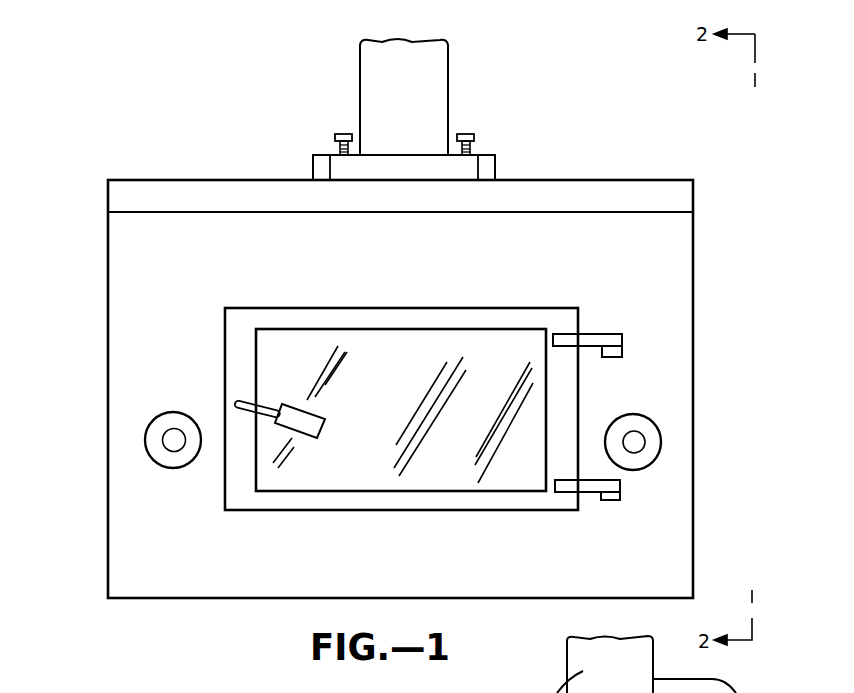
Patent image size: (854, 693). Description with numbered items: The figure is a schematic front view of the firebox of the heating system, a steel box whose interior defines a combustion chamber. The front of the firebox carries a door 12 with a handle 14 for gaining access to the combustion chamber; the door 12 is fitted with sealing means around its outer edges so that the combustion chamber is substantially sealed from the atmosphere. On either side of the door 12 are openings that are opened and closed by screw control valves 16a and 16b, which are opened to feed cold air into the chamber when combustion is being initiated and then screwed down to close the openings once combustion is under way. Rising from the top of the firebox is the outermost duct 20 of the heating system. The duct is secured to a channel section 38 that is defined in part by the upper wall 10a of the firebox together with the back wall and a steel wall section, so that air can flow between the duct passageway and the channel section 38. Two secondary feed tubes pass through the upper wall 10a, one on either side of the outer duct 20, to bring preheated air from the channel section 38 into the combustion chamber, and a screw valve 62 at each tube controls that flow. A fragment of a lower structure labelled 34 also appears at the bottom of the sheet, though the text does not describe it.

The upper wall 10a is at (645, 190).
The door 12 is at (307, 477).
The handle 14 is at (289, 408).
The screw control valve 16a is at (155, 440).
The screw control valve 16b is at (655, 450).
The outermost duct 20 is at (448, 72).
The base plate 34 is at (740, 692).
The channel section 38 is at (497, 162).
The screw valve 62 is at (343, 133).